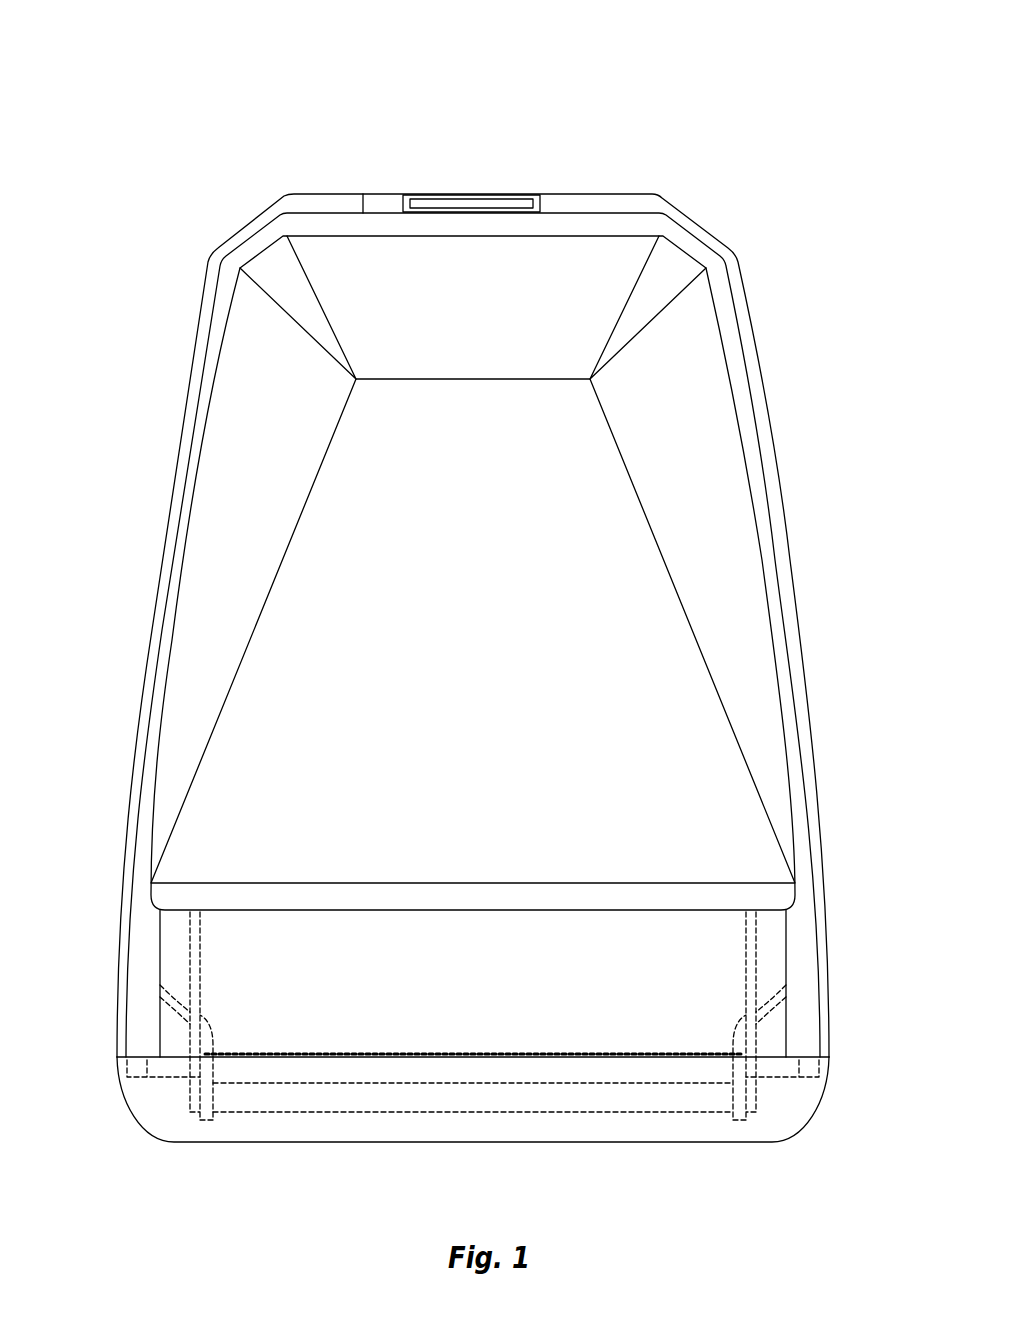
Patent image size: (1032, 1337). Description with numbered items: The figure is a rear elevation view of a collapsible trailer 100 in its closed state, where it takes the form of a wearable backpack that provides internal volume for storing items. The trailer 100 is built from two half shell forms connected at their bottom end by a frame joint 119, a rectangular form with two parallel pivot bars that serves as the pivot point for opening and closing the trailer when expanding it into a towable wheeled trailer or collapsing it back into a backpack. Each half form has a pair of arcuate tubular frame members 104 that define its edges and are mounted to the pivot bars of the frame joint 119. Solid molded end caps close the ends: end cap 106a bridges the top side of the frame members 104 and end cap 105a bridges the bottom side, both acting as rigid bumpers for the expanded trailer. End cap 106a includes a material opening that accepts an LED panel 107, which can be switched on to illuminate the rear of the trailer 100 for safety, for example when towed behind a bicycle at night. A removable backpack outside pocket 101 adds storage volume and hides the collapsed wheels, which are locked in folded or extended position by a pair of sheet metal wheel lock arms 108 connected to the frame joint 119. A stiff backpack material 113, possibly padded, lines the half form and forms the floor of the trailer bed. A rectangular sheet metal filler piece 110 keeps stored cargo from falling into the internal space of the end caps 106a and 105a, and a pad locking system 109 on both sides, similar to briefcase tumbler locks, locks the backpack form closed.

The collapsible trailer 100 is at (488, 122).
The backpack outside pocket 101 is at (478, 623).
The arcuate tubular frame members 104 is at (143, 937).
The end cap 105a is at (575, 1112).
The end cap 106a is at (363, 192).
The LED panel 107 is at (480, 213).
The wheel lock arms 108 is at (202, 982).
The pad locking system 109 is at (810, 1063).
The filler piece 110 is at (347, 1053).
The stiff backpack material 113 is at (536, 1017).
The frame joint 119 is at (357, 1108).